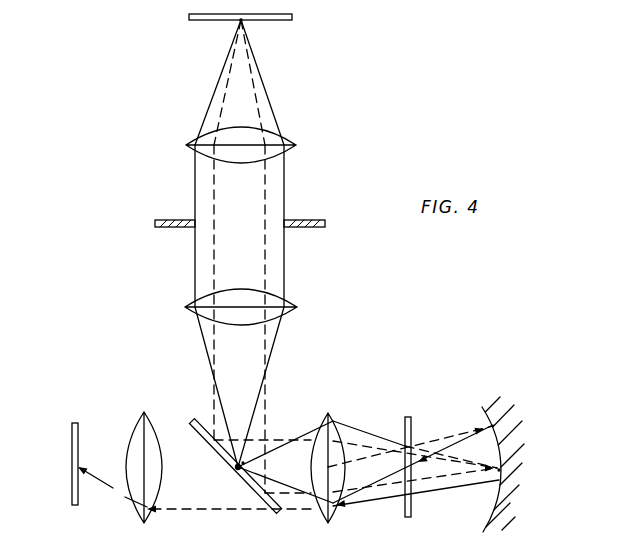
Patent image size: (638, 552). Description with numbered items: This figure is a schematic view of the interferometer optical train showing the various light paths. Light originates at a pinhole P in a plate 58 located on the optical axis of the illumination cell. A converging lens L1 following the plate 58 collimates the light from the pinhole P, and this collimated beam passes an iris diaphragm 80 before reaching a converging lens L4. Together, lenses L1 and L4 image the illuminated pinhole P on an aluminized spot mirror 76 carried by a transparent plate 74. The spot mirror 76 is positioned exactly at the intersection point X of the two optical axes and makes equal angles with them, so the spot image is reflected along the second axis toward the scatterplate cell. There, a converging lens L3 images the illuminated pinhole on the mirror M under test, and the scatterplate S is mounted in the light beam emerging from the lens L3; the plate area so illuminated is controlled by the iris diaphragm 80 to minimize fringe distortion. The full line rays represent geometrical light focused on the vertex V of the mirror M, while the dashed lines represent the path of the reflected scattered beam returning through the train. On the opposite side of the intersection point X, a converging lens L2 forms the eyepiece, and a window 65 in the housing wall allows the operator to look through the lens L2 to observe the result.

The plate 58 is at (270, 21).
The pinhole P is at (238, 22).
The converging lens L1 is at (283, 141).
The iris diaphragm 80 is at (305, 221).
The converging lens L4 is at (290, 304).
The transparent plate 74 is at (197, 430).
The spot mirror 76 is at (238, 470).
The intersection point X is at (243, 463).
The converging lens L2 is at (138, 418).
The window 65 is at (72, 453).
The converging lens L3 is at (333, 418).
The scatterplate S is at (411, 502).
The mirror under test M is at (488, 419).
The vertex V is at (499, 471).